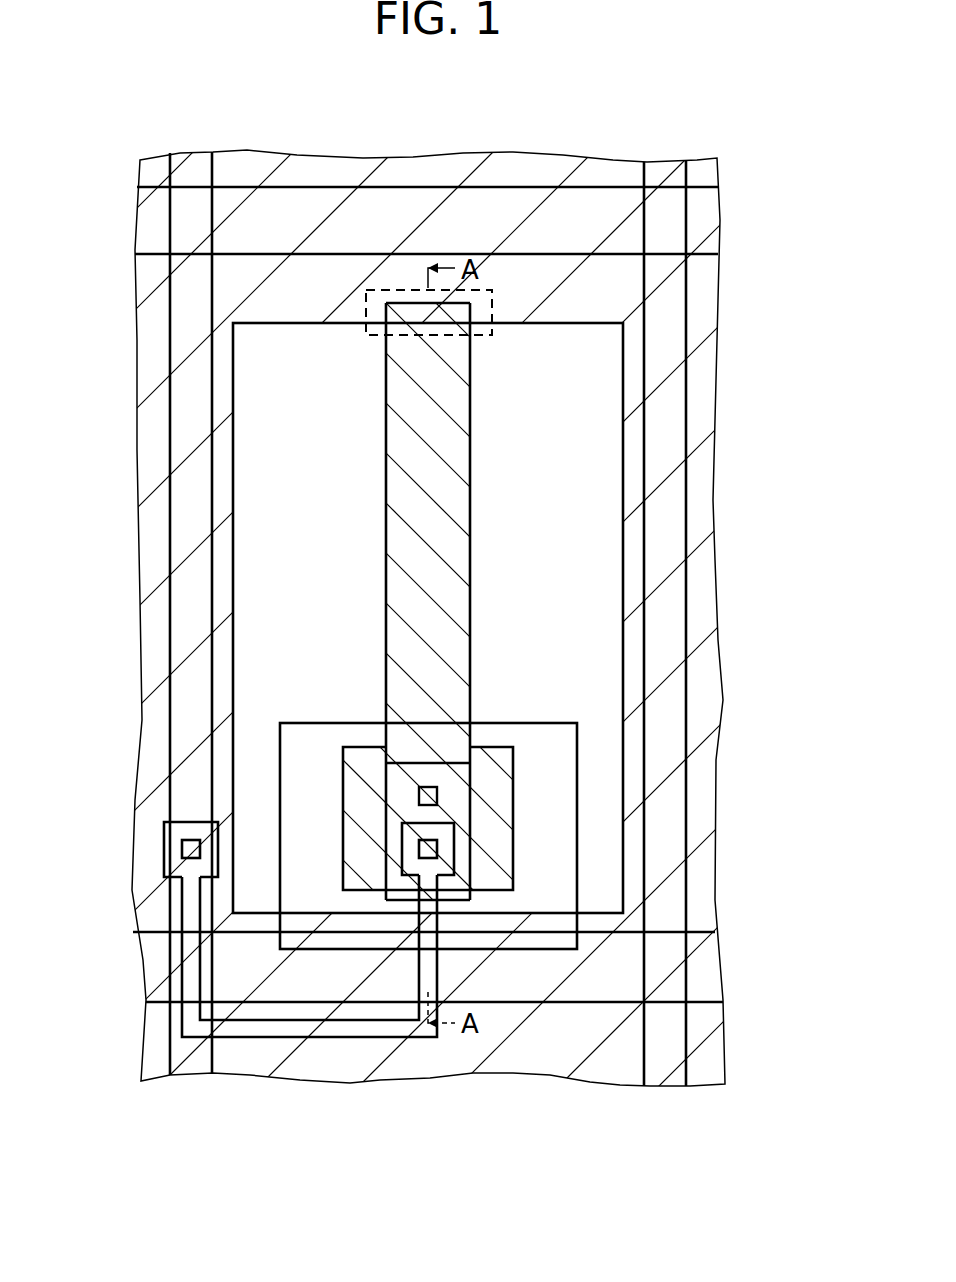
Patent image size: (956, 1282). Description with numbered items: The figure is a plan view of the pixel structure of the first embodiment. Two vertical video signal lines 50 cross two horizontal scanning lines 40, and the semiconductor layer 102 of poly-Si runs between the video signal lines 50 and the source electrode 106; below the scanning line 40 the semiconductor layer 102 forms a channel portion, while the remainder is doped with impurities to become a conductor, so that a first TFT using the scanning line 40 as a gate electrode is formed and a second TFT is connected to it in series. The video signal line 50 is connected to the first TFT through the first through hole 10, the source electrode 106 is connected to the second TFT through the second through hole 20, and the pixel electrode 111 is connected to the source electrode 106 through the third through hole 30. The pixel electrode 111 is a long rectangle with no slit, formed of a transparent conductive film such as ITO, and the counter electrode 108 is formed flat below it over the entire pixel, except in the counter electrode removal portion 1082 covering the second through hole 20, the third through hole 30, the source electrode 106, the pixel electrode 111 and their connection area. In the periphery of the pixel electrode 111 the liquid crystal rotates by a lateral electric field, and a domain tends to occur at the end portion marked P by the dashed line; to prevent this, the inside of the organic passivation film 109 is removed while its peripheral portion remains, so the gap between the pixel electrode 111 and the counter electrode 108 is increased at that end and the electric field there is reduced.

The first through hole 10 is at (183, 848).
The second through hole 20 is at (419, 847).
The third through hole 30 is at (418, 789).
The scanning line 40 is at (702, 220).
The video signal line 50 is at (192, 175).
The semiconductor layer 102 is at (337, 1030).
The source electrode 106 is at (455, 790).
The counter electrode 108 is at (590, 442).
The organic passivation film 109 is at (633, 527).
The pixel electrode 111 is at (460, 493).
The counter electrode removal portion 1082 is at (578, 815).
The P portion P is at (373, 308).